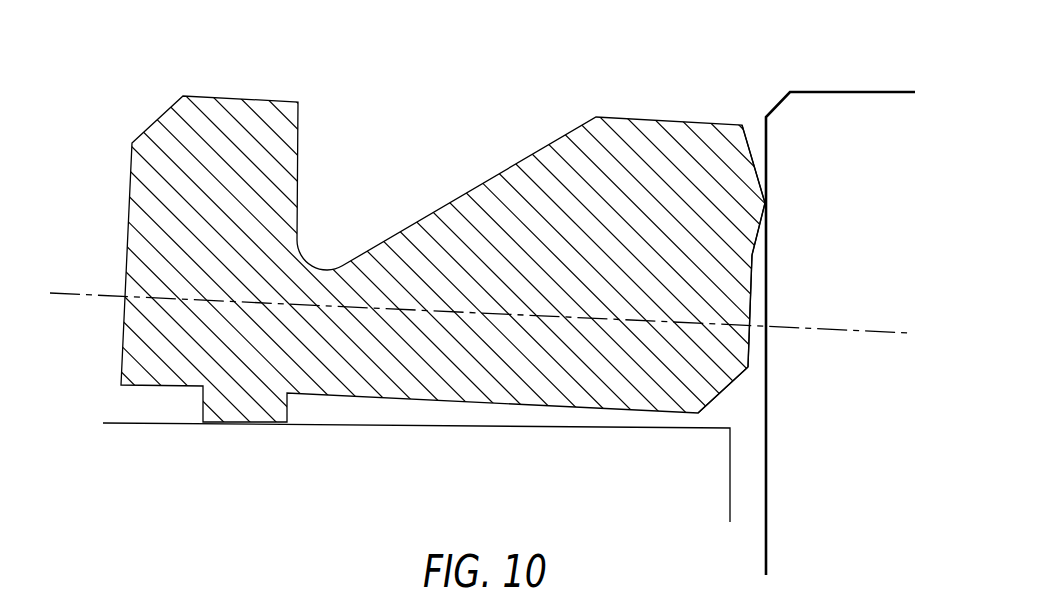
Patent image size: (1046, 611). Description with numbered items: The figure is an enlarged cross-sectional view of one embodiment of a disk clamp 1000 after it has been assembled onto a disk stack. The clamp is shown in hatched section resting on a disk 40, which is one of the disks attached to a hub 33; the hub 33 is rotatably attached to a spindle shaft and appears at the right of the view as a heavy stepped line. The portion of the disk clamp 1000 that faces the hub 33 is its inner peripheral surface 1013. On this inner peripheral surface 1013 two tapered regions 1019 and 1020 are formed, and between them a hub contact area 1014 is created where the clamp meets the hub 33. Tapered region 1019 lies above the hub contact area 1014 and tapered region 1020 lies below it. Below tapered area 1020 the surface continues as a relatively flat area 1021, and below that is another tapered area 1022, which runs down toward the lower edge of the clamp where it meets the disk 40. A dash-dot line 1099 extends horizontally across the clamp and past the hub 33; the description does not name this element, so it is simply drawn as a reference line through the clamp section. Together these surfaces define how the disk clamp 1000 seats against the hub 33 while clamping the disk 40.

The disk clamp 1000 is at (663, 120).
The tapered region 1019 is at (742, 167).
The tapered region 1020 is at (748, 225).
The relatively flat area 1021 is at (748, 293).
The tapered area 1022 is at (708, 392).
The hub contact area 1014 is at (767, 203).
The inner peripheral surface 1013 is at (757, 337).
The centerline of seal 1099 is at (892, 332).
The hub 33 is at (852, 90).
The disk 40 is at (341, 490).